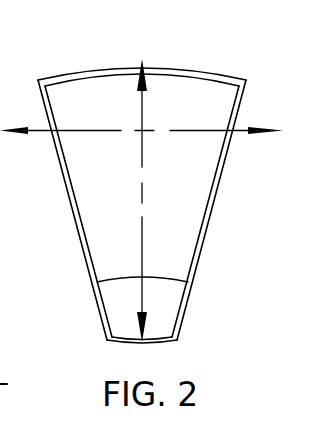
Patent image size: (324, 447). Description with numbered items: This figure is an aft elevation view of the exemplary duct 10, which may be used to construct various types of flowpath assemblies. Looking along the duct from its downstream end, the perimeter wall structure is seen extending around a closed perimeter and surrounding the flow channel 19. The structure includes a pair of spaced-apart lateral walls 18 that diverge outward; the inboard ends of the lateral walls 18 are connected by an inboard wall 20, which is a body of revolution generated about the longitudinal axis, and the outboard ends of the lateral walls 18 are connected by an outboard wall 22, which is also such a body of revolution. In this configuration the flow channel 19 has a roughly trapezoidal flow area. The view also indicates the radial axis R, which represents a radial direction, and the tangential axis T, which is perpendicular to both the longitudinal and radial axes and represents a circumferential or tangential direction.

The duct 10 is at (151, 195).
The lateral walls 18 is at (72, 203).
The flow channel 19 is at (95, 116).
The inboard wall 20 is at (155, 341).
The outboard wall 22 is at (96, 70).
The tangential axis T is at (202, 130).
The radial axis R is at (143, 153).